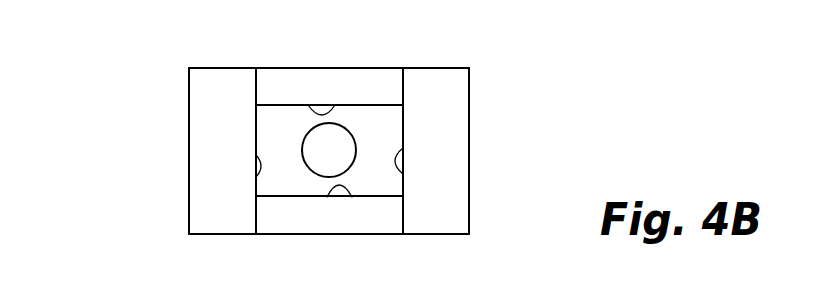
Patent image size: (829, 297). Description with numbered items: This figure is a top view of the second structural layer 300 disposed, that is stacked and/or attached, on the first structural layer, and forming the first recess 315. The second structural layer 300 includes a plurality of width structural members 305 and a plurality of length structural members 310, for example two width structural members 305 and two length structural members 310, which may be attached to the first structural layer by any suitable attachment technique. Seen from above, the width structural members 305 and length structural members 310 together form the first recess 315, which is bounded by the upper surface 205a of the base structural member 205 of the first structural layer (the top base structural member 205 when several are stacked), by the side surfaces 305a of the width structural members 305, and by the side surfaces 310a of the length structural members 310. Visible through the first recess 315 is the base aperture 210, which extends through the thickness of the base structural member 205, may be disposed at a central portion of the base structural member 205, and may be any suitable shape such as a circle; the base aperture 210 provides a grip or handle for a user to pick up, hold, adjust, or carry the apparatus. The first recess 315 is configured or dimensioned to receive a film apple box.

The second structural layer 300 is at (143, 148).
The width structural member 305 is at (203, 185).
The side surface of width structural member 305a is at (261, 166).
The length structural member 310 is at (322, 85).
The side surface of length structural member 310a is at (334, 109).
The base structural member 205 is at (375, 133).
The upper surface of base structural member 205a is at (378, 108).
The base aperture 210 is at (336, 156).
The first recess 315 is at (284, 122).